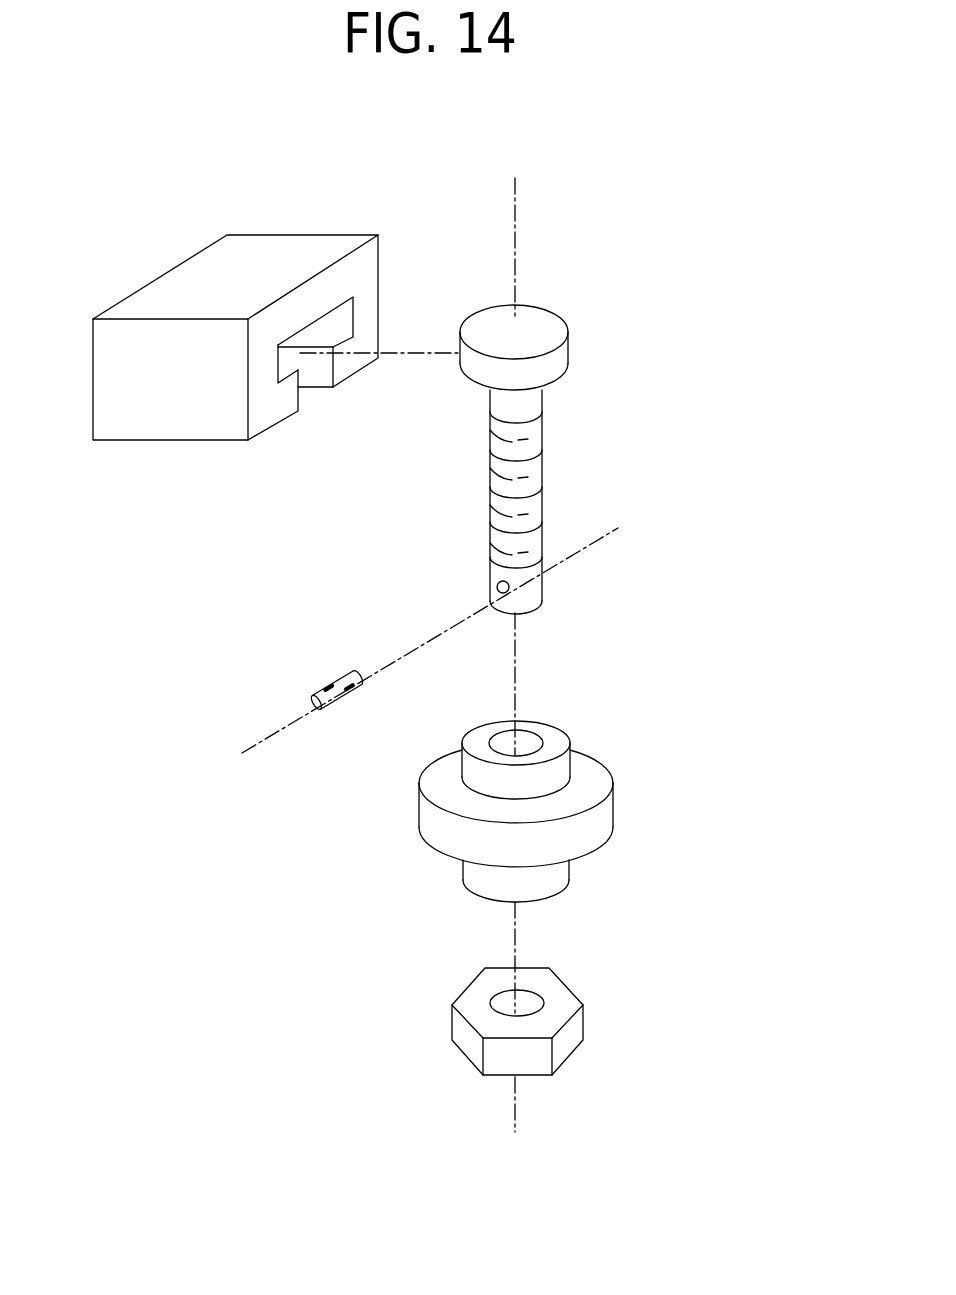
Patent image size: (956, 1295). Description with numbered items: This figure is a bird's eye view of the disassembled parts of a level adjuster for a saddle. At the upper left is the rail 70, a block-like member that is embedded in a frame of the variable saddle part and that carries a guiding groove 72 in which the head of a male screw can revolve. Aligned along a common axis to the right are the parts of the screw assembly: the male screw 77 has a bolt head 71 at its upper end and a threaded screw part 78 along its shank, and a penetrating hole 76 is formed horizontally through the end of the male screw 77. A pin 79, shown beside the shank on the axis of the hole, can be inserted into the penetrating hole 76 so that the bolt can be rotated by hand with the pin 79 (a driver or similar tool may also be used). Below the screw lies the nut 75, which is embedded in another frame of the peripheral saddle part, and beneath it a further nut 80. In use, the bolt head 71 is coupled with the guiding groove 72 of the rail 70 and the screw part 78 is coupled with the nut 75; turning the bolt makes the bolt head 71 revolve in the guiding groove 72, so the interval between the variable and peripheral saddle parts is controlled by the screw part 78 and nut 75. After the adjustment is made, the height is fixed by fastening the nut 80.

The rail 70 is at (288, 273).
The bolt head 71 is at (539, 340).
The guiding groove 72 is at (342, 320).
The nut 75 is at (615, 815).
The penetrating hole 76 is at (507, 590).
The male screw 77 is at (527, 402).
The screw part 78 is at (537, 517).
The pin 79 is at (325, 692).
The nut 80 is at (583, 1010).